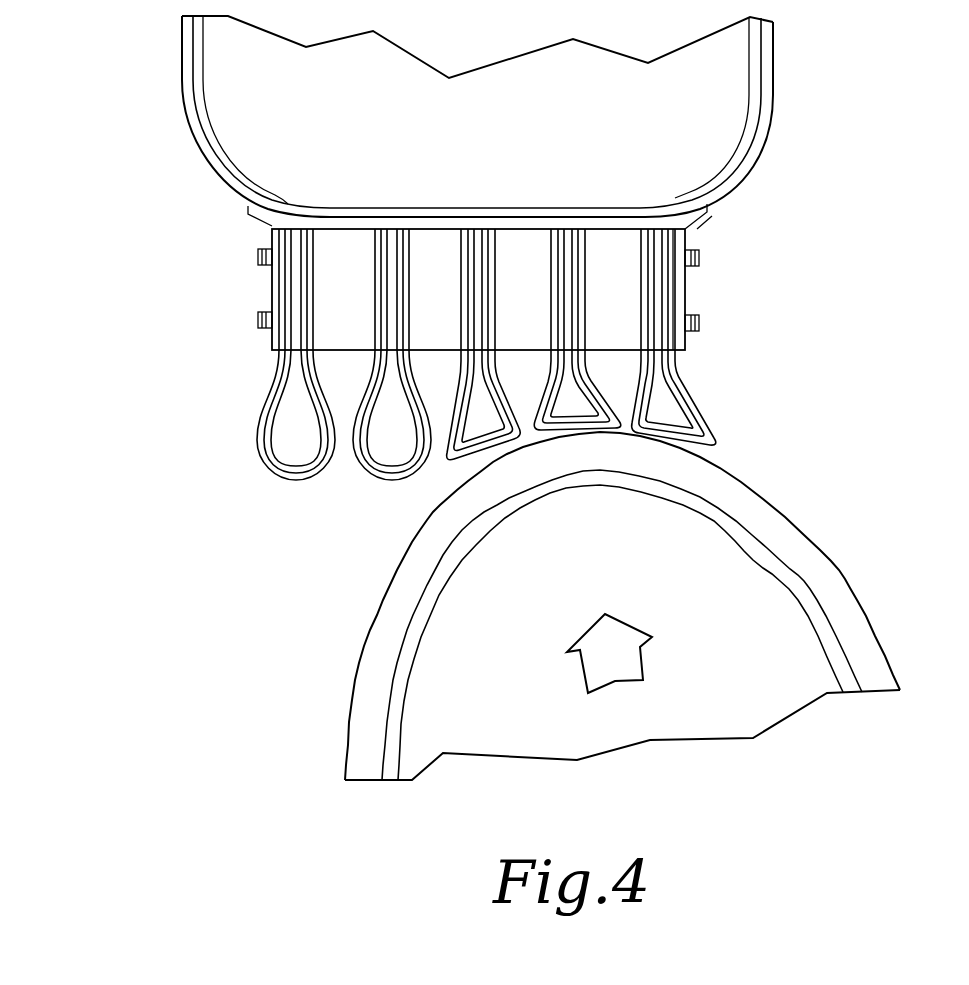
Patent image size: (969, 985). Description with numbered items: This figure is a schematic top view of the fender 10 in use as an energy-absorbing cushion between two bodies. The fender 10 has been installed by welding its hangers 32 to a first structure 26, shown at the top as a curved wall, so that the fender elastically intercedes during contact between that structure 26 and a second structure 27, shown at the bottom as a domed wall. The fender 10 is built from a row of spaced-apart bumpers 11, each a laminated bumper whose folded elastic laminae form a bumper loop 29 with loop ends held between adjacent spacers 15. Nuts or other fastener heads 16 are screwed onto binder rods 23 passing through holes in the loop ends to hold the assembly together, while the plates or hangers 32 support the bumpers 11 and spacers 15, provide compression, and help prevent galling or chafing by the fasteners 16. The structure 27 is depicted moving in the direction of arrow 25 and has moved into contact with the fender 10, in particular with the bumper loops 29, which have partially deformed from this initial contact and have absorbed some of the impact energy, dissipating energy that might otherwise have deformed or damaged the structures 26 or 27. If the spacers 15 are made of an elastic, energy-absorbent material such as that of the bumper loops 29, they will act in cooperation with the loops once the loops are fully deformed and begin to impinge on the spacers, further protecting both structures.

The fender 10 is at (165, 305).
The bumper 11 is at (297, 506).
The spacer 15 is at (278, 226).
The fastener head 16 is at (258, 327).
The binder rod 23 is at (258, 320).
The arrow 25 is at (609, 653).
The structure 26 is at (183, 128).
The structure 27 is at (345, 742).
The bumper loop 29 is at (718, 436).
The plate (hanger) 32 is at (268, 352).